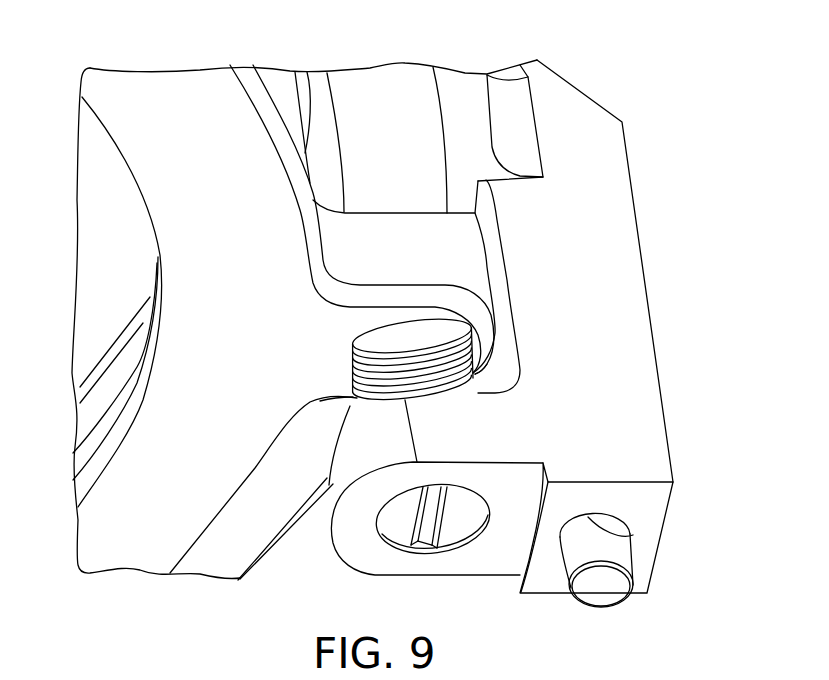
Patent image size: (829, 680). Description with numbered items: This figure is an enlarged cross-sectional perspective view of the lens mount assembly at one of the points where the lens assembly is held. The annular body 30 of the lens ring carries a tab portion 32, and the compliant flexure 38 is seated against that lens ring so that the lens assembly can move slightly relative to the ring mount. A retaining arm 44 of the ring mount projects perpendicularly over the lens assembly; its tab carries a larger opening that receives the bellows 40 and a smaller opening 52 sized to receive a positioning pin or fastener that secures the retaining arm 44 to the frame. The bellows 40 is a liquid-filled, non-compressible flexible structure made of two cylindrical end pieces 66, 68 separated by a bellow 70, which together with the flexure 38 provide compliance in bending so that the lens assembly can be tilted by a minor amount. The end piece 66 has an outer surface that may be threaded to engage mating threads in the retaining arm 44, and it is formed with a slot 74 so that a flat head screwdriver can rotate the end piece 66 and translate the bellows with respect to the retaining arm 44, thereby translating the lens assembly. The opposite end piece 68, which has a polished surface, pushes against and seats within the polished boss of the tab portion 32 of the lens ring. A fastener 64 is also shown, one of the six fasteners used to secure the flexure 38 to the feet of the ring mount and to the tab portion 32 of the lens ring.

The annular body 30 is at (200, 110).
The flexure 38 is at (382, 115).
The retaining arm 44 is at (605, 203).
The tab portion 32 is at (420, 243).
The end piece 68 is at (427, 318).
The bellows 40 is at (486, 372).
The bellow 70 is at (480, 378).
The smaller opening 52 is at (633, 535).
The fastener 64 is at (575, 562).
The end piece 66 is at (393, 528).
The slot 74 is at (423, 530).